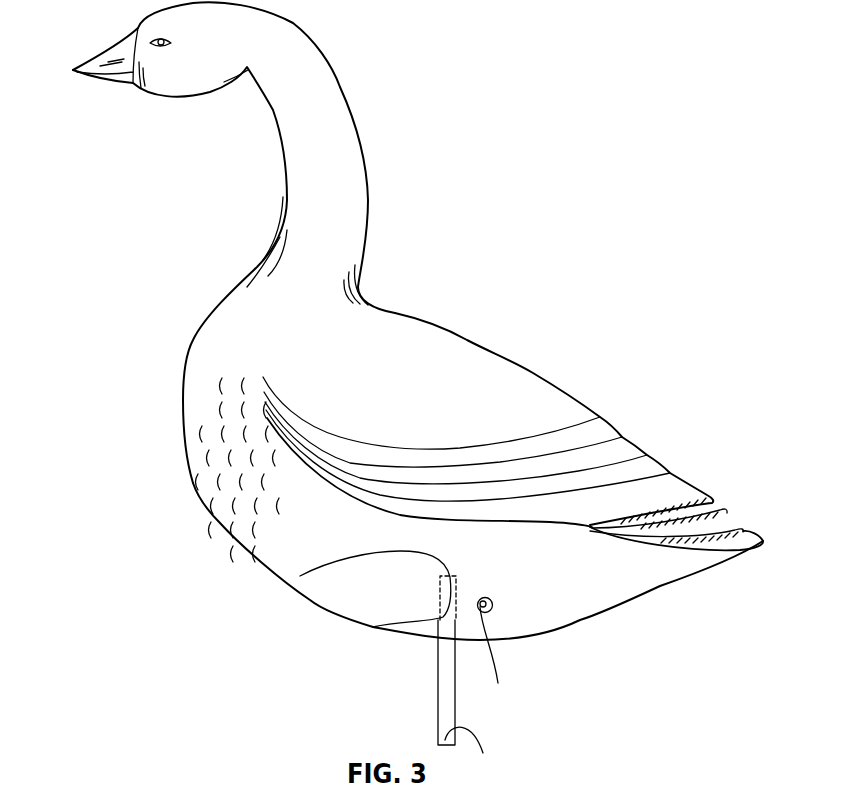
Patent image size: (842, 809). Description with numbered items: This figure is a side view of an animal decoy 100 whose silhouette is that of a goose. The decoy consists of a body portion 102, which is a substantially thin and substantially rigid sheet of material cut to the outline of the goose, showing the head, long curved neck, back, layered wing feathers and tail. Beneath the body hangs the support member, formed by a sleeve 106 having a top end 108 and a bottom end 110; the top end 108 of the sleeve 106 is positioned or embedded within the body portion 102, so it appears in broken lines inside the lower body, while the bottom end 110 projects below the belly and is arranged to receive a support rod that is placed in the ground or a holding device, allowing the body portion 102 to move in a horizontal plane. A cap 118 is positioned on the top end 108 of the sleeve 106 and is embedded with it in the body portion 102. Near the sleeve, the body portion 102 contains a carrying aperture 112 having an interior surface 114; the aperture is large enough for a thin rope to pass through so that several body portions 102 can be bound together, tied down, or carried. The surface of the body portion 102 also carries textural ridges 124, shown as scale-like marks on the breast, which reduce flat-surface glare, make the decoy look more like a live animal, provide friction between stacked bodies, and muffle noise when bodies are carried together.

The animal decoy 100 is at (503, 213).
The body portion 102 is at (423, 368).
The sleeve 106 is at (448, 660).
The top end 108 is at (373, 627).
The bottom end 110 is at (479, 757).
The carrying aperture 112 is at (492, 605).
The interior surface 114 is at (505, 660).
The cap 118 is at (300, 576).
The textural ridges 124 is at (270, 468).